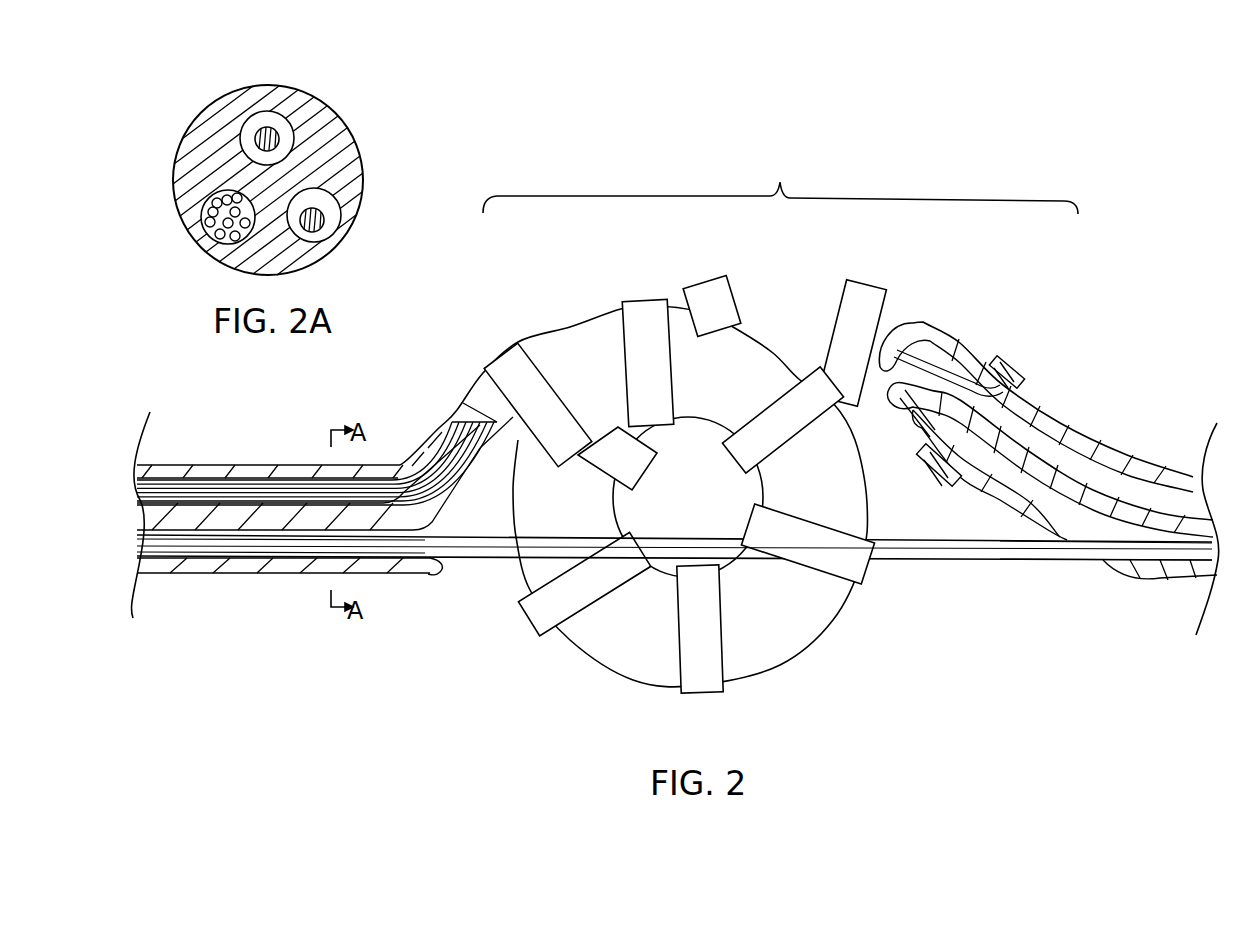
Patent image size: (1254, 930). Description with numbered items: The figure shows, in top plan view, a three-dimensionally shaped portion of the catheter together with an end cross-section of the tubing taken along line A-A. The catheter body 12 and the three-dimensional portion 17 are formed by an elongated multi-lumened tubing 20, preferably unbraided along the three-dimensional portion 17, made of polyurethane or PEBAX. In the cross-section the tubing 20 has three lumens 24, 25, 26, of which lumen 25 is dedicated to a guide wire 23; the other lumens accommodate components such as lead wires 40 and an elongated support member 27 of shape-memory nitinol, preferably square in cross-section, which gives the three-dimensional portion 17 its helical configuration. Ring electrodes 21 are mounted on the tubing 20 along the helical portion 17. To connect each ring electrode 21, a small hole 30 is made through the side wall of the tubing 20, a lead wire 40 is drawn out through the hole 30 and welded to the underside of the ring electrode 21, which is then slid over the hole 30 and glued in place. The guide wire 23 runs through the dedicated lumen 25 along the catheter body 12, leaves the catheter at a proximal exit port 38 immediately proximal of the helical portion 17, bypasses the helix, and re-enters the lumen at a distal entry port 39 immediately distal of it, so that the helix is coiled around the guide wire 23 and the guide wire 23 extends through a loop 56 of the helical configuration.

In FIG. 2A, the catheter body 12 is at (202, 74).
In FIG. 2, the catheter body 12 is at (243, 590).
In FIG. 2, the 3-D portion 17 is at (780, 182).
In FIG. 2A, the multi-lumened tubing 20 is at (362, 168).
In FIG. 2, the multi-lumened tubing 20 is at (278, 465).
In FIG. 2, the ring electrodes 21 is at (718, 282).
In FIG. 2A, the guide wire 23 is at (325, 222).
In FIG. 2, the guide wire 23 is at (485, 565).
In FIG. 2A, the lumen 24 is at (295, 135).
In FIG. 2, the lumen 24 is at (133, 478).
In FIG. 2A, the lumen 25 is at (340, 212).
In FIG. 2, the lumen 25 is at (143, 533).
In FIG. 2A, the lumen 26 is at (205, 207).
In FIG. 2A, the support member 27 is at (255, 140).
In FIG. 2, the hole 30 is at (1030, 393).
In FIG. 2, the proximal exit port 38 is at (443, 575).
In FIG. 2, the distal entry port 39 is at (1138, 575).
In FIG. 2A, the lead wires 40 is at (215, 220).
In FIG. 2, the lead wires 40 is at (944, 348).
In FIG. 2, the loop 56 is at (818, 685).